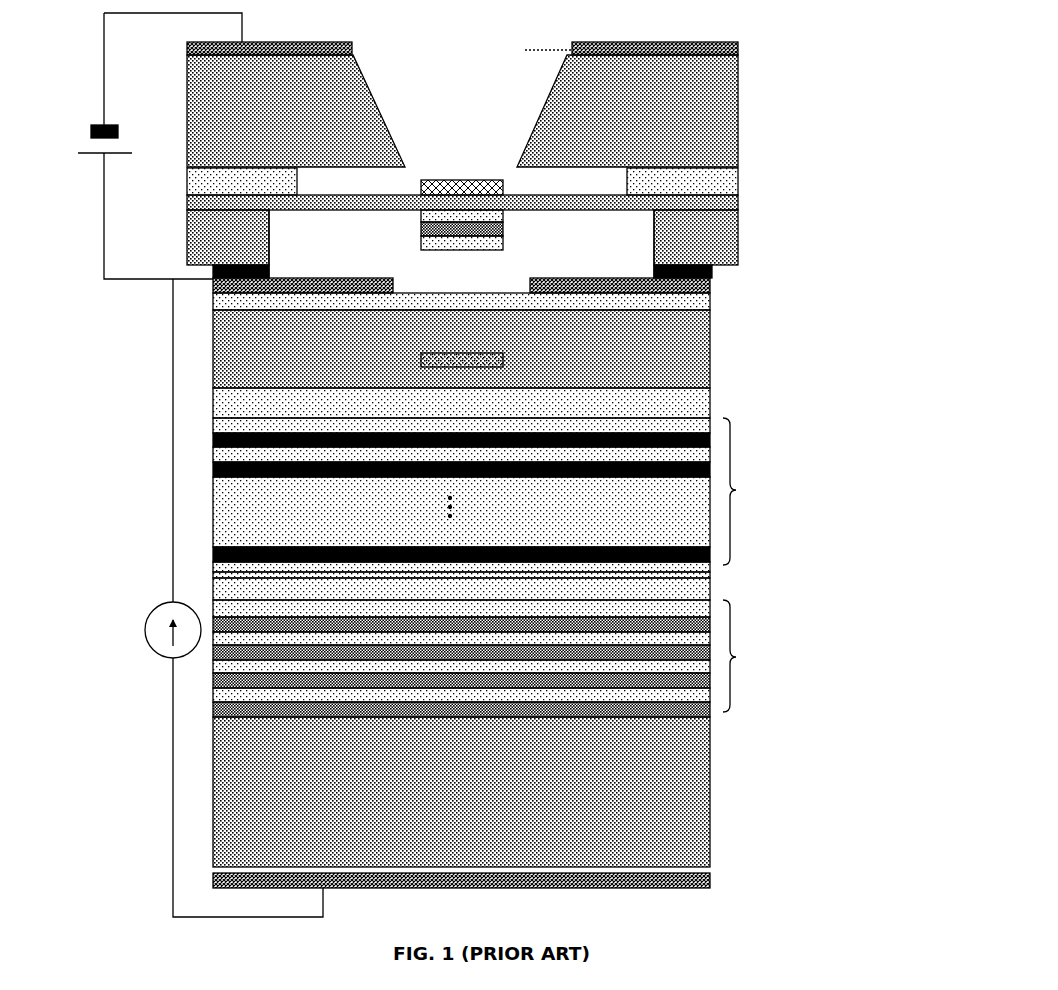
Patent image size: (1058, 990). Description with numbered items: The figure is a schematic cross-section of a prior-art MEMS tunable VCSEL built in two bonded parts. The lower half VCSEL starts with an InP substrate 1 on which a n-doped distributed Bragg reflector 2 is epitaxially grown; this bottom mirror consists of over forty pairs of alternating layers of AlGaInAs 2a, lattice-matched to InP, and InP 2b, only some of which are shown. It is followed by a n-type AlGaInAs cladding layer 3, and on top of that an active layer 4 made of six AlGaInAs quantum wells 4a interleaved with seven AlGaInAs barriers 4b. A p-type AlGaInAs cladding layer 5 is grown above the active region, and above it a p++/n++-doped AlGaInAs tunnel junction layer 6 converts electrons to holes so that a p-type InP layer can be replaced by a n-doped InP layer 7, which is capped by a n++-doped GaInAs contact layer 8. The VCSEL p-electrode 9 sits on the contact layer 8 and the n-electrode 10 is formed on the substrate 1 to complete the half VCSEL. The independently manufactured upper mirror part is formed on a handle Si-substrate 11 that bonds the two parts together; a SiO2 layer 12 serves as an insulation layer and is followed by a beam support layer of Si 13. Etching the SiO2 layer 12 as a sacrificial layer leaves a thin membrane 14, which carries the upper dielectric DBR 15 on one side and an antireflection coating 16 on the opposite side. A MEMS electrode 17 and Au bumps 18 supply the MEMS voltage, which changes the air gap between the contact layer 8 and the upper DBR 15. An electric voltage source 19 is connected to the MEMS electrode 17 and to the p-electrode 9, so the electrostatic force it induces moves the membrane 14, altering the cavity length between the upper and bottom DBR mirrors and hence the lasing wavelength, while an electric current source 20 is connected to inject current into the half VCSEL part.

The InP substrate 1 is at (461, 792).
The n-doped distributed Bragg reflector 2 is at (539, 671).
The AlGaInAs layer 2a is at (704, 679).
The InP layer 2b is at (704, 694).
The n-type AlGaInAs cladding layer 3 is at (461, 589).
The active layer 4 is at (536, 495).
The AlGaInAs quantum well 4a is at (716, 549).
The AlGaInAs barrier 4b is at (716, 577).
The p-type AlGaInAs cladding layer 5 is at (461, 403).
The tunnel junction layer 6 is at (508, 354).
The n-doped InP layer 7 is at (461, 349).
The n++-doped GaInAs contact layer 8 is at (714, 297).
The p-electrode 9 is at (542, 278).
The n-electrode 10 is at (398, 893).
The handle Si-substrate 11 is at (462, 111).
The SiO2 layer 12 is at (728, 181).
The beam support layer 13 is at (537, 233).
The membrane 14 is at (534, 201).
The upper dielectric DBR 15 is at (415, 239).
The antireflection coating 16 is at (461, 176).
The MEMS electrode 17 is at (330, 27).
The Au bump 18 is at (716, 266).
The electric voltage source 19 is at (131, 146).
The electric current source 20 is at (191, 598).